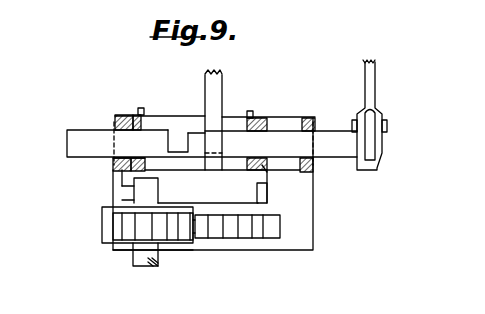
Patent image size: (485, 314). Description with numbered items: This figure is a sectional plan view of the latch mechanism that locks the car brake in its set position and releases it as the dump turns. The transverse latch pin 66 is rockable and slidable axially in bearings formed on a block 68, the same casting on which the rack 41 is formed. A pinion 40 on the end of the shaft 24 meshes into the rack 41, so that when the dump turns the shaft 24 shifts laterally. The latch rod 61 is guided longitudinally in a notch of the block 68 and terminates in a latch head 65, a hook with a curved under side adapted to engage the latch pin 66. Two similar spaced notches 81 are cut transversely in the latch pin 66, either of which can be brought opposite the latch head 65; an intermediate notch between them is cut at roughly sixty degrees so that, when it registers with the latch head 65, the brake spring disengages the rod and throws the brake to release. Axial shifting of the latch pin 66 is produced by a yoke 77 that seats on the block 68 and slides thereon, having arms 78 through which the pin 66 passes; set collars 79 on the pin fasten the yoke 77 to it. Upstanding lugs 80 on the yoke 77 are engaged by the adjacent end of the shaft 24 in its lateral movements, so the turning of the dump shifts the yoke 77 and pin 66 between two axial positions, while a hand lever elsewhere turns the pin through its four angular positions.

The shaft 24 is at (137, 258).
The pinion 40 is at (120, 229).
The rack 41 is at (266, 240).
The latch rod 61 is at (223, 96).
The latch head 65 is at (215, 169).
The latch pin 66 is at (76, 143).
The block 68 is at (305, 212).
The yoke 77 is at (268, 185).
The arm 78 is at (140, 115).
The set collar 79 is at (146, 165).
The lug 80 is at (132, 192).
The notch 81 is at (180, 143).